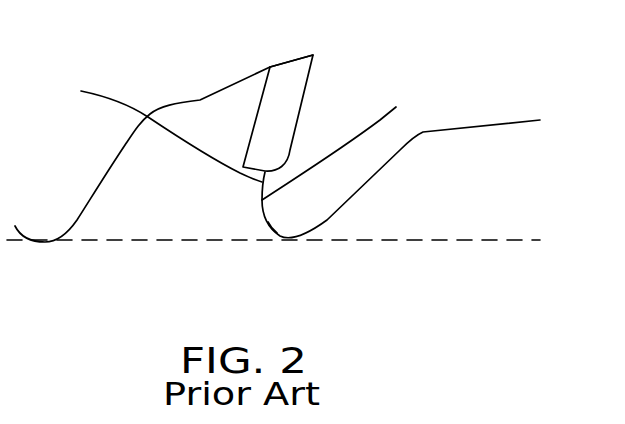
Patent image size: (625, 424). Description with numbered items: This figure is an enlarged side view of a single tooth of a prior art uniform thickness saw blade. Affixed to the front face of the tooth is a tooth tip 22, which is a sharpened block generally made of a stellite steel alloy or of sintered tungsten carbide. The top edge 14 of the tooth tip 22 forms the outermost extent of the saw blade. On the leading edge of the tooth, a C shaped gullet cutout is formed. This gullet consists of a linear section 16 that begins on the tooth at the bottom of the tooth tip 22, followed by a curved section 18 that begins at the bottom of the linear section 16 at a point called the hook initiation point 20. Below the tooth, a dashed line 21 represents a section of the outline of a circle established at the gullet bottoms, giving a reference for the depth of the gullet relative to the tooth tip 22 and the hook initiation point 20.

The top edge 14 is at (306, 56).
The linear section 16 is at (142, 154).
The curved section 18 is at (282, 225).
The hook initiation point 20 is at (396, 107).
The dashed line 21 is at (475, 240).
The tooth tip 22 is at (283, 78).